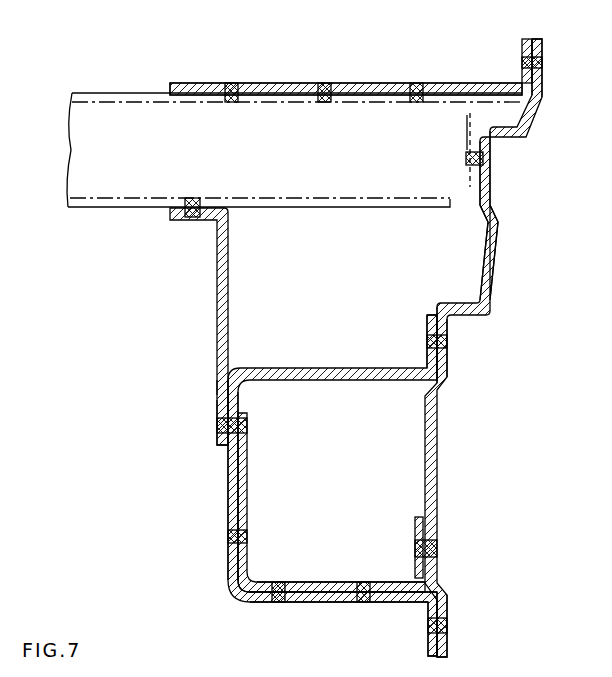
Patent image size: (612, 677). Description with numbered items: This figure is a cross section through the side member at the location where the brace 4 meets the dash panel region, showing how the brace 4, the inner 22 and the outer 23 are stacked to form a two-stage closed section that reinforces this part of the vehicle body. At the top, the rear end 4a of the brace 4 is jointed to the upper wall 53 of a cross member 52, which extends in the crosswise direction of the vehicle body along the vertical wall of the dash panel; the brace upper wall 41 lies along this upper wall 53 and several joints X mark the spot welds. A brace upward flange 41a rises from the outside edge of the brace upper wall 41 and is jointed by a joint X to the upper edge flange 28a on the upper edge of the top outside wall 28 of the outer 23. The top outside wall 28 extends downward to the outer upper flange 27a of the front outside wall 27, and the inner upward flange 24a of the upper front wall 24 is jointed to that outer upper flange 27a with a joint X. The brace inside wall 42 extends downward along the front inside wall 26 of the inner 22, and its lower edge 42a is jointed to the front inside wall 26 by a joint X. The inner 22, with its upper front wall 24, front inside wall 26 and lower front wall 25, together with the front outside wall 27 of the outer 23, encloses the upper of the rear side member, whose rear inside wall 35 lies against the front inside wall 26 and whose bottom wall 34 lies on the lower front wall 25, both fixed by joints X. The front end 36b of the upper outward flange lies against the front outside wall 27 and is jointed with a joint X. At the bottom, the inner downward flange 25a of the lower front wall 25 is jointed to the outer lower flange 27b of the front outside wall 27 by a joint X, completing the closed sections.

The brace 4 is at (351, 53).
The rear end of the brace 4a is at (267, 83).
The brace upper wall 41 is at (346, 89).
The brace upward flange 41a is at (522, 55).
The inner 22 is at (212, 382).
The outer 23 is at (458, 442).
The upper front wall 24 is at (316, 368).
The inner upward flange 24a is at (427, 322).
The lower front wall 25 is at (312, 603).
The inner downward flange 25a is at (428, 645).
The front inside wall 26 is at (228, 481).
The front outside wall 27 is at (440, 403).
The outer upper flange 27a is at (447, 368).
The outer lower flange 27b is at (447, 600).
The top outside wall 28 is at (499, 235).
The upper edge flange 28a is at (543, 52).
The bottom wall 34 is at (322, 582).
The rear inside wall 35 is at (247, 470).
The front end of the upper outward flange 36b is at (423, 532).
The brace inside wall 42 is at (217, 295).
The lower edge of the brace inside wall 42a is at (217, 411).
The cross member 52 is at (112, 107).
The upper wall of the cross member 53 is at (154, 93).
The joint X is at (325, 83).